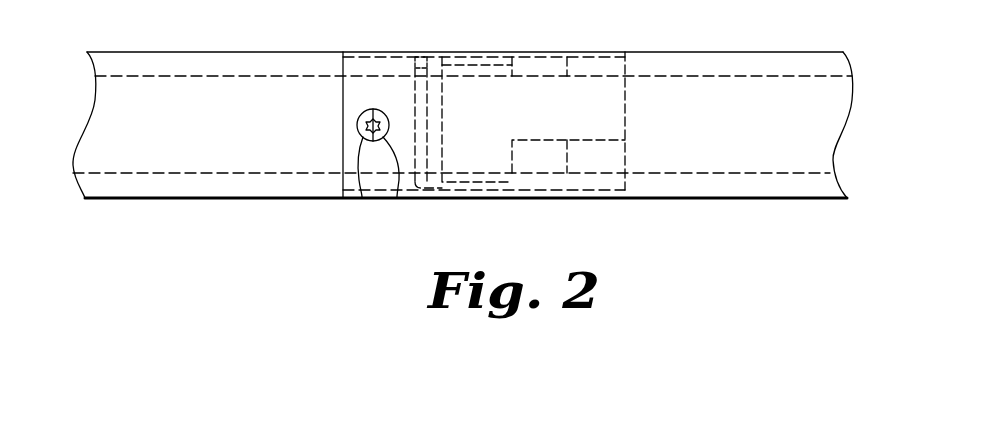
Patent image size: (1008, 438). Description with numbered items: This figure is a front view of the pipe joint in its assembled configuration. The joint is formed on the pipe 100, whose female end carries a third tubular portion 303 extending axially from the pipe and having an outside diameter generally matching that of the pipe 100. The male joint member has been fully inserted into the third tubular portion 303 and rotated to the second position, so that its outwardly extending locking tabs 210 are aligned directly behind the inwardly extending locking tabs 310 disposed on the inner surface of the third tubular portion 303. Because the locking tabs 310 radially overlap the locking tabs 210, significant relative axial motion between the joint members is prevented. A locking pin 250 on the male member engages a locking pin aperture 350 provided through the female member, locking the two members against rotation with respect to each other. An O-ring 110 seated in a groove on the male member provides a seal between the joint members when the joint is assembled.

The pipe 100 is at (186, 52).
The third tubular portion 303 is at (378, 52).
The O-ring 110 is at (427, 58).
The inwardly extending locking tabs 310 is at (530, 68).
The outwardly extending locking tabs 210 is at (607, 68).
The locking pin 250 is at (362, 197).
The locking pin aperture 350 is at (397, 197).